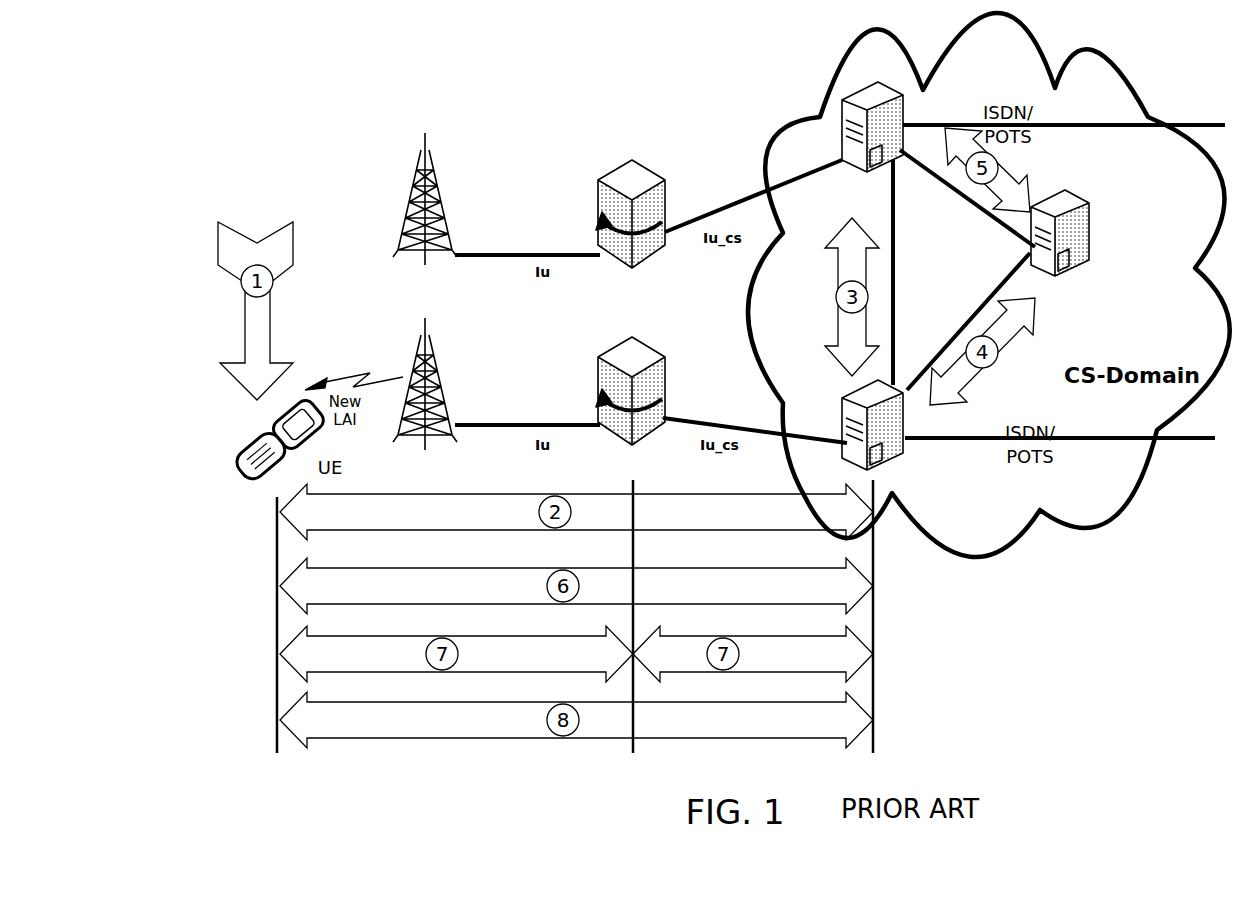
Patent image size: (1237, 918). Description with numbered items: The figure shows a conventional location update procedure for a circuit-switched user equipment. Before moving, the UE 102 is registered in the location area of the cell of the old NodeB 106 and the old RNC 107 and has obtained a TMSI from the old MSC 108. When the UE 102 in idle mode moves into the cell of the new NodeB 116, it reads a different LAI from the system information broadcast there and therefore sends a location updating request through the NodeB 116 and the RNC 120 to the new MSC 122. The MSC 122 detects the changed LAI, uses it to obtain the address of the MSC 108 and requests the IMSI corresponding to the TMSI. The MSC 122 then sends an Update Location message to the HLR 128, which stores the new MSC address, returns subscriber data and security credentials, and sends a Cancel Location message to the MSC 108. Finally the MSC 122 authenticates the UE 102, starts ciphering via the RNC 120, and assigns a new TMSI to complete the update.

The UE 102 is at (263, 448).
The NodeB 106 is at (430, 173).
The RNC 107 is at (640, 165).
The NodeB 116 is at (432, 368).
The Radio Network Controller (RNC) 120 is at (655, 358).
The MSC 108 is at (862, 100).
The MSC 122 is at (845, 430).
The HLR 128 is at (1087, 215).